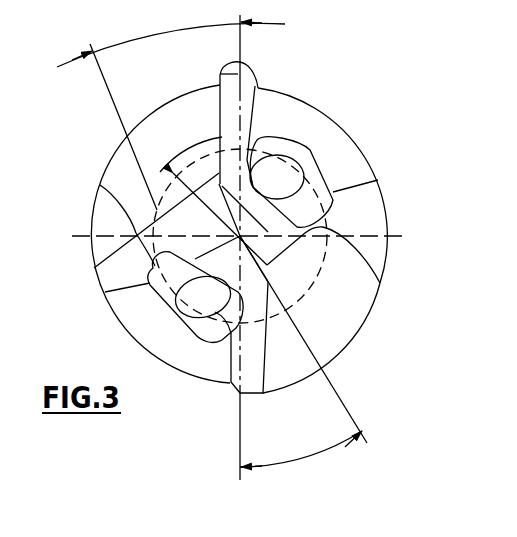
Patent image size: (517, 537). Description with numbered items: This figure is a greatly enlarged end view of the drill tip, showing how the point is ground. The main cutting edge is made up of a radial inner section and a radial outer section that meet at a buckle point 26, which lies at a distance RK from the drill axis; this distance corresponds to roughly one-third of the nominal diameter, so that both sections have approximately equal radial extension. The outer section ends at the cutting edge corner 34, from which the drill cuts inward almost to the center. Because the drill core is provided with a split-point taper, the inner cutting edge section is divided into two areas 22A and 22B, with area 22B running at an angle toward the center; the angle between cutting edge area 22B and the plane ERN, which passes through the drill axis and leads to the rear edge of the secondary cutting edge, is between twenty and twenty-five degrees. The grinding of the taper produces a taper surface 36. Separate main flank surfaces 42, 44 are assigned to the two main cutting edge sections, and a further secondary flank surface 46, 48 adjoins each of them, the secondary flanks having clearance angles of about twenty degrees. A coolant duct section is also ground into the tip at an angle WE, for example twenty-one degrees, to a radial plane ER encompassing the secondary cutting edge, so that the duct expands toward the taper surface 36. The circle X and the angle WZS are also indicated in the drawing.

The area of radial inner main cutting edge section 22A is at (258, 176).
The area of radial inner main cutting edge section 22B is at (218, 338).
The buckle point 26 is at (176, 102).
The cutting edge corner 34 is at (247, 64).
The taper surface 36 is at (100, 244).
The main flank surface 42 is at (323, 213).
The main flank surface 44 is at (232, 107).
The secondary flank surface 46 is at (318, 180).
The secondary flank surface 48 is at (320, 142).
The radial plane ER is at (243, 38).
The plane through the drill axis ERN is at (238, 446).
The grinding angle WE is at (147, 34).
The distance of buckle point from axis RK is at (101, 262).
The pitch circle X is at (337, 264).
The tool angle WZS is at (313, 458).